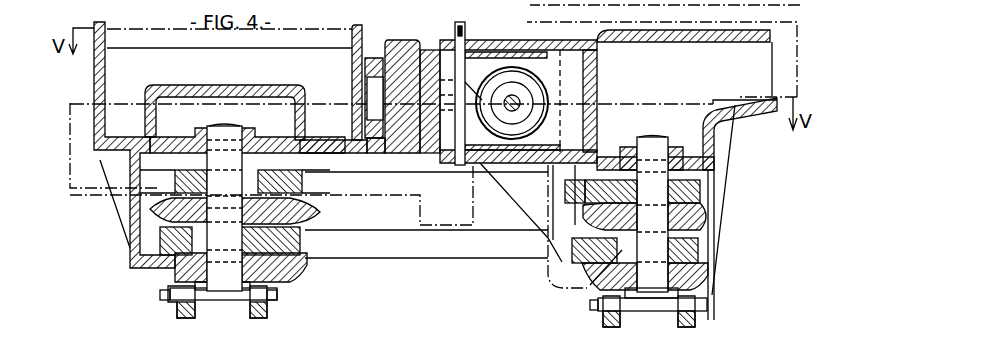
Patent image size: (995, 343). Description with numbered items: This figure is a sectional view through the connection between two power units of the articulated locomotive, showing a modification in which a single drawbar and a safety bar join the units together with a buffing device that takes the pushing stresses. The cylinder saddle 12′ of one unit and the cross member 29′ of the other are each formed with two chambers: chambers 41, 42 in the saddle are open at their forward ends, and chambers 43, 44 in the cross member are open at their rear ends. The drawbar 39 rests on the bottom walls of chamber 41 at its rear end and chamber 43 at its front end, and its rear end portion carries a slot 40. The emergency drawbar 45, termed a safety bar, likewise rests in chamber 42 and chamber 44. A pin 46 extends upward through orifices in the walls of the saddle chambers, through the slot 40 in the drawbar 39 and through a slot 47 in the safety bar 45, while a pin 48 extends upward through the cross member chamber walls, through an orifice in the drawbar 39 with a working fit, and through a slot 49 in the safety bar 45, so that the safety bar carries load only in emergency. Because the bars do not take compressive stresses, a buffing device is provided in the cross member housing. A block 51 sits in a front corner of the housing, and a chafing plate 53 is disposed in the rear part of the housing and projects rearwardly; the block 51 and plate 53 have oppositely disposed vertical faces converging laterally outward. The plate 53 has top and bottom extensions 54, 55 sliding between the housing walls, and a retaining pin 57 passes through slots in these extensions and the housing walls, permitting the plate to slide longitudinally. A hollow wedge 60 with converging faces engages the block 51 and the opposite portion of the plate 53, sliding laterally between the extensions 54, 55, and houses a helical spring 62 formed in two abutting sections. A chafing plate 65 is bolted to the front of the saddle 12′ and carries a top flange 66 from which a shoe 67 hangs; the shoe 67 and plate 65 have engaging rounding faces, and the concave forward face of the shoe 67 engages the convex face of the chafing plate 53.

The cylinder saddle 12′ is at (223, 145).
The cross member 29′ is at (684, 63).
The drawbar 39 is at (497, 195).
The slot 40 is at (257, 147).
The chamber 41 is at (155, 181).
The chamber 42 is at (150, 237).
The chamber 43 is at (708, 190).
The chamber 44 is at (708, 252).
The emergency drawbar 45 is at (368, 247).
The pin 46 is at (228, 124).
The slot 47 is at (178, 255).
The pin 48 is at (647, 142).
The slot 49 is at (593, 283).
The block 51 is at (582, 73).
The chafing plate 53 is at (421, 50).
The top extension 54 is at (520, 47).
The bottom extension 55 is at (522, 163).
The retaining pin 57 is at (470, 36).
The wedge 60 is at (565, 97).
The helical spring 62 is at (540, 116).
The chafing plate 65 is at (355, 71).
The flange 66 is at (390, 42).
The shoe 67 is at (383, 165).